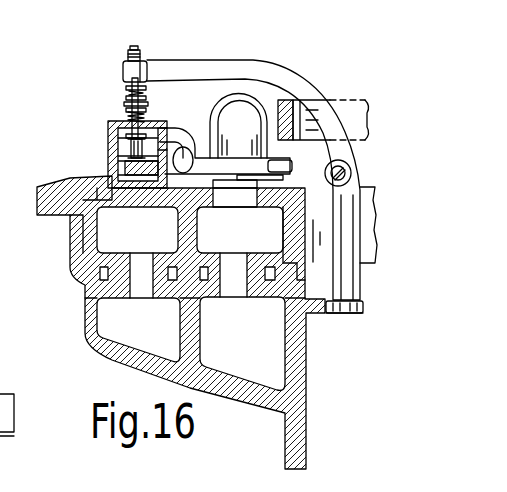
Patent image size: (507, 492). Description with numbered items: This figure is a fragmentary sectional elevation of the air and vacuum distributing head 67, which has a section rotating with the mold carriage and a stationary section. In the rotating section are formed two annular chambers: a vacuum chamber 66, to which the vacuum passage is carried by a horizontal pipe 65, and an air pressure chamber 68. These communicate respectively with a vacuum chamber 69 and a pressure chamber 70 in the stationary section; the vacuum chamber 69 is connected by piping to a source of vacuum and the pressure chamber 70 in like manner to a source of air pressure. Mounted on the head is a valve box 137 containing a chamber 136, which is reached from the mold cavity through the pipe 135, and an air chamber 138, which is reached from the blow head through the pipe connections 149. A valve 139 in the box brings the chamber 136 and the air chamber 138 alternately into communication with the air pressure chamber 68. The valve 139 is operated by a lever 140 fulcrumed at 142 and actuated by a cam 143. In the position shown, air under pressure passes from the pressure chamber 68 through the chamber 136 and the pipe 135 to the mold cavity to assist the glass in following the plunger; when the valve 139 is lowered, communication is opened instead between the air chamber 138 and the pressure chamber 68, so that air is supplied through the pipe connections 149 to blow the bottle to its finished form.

The horizontal pipe 65 is at (353, 113).
The vacuum chamber 66 is at (240, 230).
The distributing head 67 is at (72, 269).
The air pressure chamber 68 is at (100, 234).
The vacuum chamber 69 is at (268, 371).
The pressure chamber 70 is at (108, 327).
The pipe 135 is at (198, 166).
The chamber 136 is at (120, 130).
The valve box 137 is at (110, 135).
The air chamber 138 is at (125, 167).
The valve 139 is at (131, 147).
The lever 140 is at (205, 55).
The fulcrum 142 is at (351, 175).
The cam 143 is at (320, 314).
The pipe connections 149 is at (286, 163).